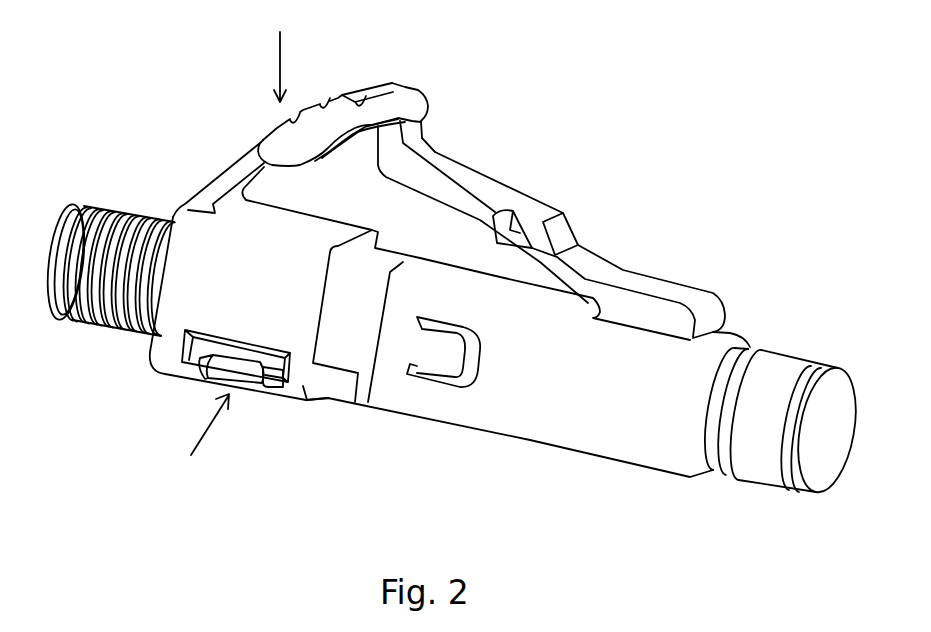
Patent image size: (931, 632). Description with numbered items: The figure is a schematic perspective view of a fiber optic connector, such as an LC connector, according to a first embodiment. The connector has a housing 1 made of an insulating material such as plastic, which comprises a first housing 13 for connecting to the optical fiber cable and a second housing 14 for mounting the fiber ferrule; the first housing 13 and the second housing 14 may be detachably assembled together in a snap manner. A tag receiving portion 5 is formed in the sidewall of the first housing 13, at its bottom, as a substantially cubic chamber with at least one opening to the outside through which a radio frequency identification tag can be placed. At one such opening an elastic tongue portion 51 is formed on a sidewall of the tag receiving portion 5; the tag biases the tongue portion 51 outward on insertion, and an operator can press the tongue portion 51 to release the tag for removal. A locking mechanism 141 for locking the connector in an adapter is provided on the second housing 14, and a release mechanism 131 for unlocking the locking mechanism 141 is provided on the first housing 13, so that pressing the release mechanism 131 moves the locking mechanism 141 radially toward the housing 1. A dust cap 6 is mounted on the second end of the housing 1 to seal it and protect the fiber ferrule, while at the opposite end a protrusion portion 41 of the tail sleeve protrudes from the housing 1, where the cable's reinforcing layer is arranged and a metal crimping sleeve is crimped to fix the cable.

The housing 1 is at (622, 415).
The tag receiving portion 5 is at (273, 362).
The dust cap 6 is at (775, 378).
The first housing 13 is at (187, 297).
The second housing 14 is at (428, 405).
The protrusion portion 41 is at (108, 207).
The elastic tongue portion 51 is at (245, 375).
The release mechanism 131 is at (290, 145).
The locking mechanism 141 is at (480, 158).